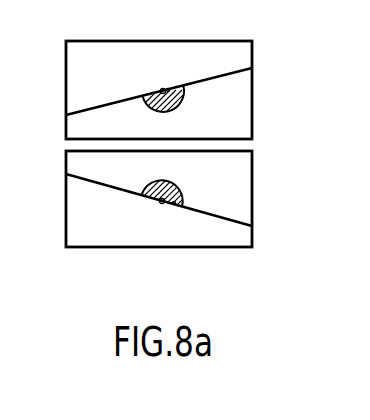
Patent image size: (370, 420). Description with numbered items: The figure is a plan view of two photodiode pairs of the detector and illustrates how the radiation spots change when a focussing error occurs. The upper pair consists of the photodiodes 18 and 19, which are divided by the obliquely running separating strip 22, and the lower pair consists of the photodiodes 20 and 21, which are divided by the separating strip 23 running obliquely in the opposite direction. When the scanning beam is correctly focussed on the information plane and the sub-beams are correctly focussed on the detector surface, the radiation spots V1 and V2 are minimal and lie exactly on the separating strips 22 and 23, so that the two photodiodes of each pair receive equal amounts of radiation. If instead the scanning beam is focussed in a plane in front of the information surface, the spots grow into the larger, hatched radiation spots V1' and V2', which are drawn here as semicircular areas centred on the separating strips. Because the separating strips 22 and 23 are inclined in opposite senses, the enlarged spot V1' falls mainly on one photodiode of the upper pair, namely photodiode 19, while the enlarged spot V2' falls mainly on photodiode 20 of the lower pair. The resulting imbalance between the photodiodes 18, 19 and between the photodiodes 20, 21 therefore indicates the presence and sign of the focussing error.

The upper layer of first body 18 is at (78, 65).
The lower layer of first body 19 is at (77, 130).
The upper layer of second body 20 is at (78, 163).
The lower layer of second body 21 is at (85, 219).
The separating strip 22 is at (240, 71).
The separating strip 23 is at (242, 221).
The radiation spot V1 is at (151, 53).
The radiation spot V1' is at (184, 52).
The radiation spot V2 is at (150, 239).
The radiation spot V2' is at (180, 241).